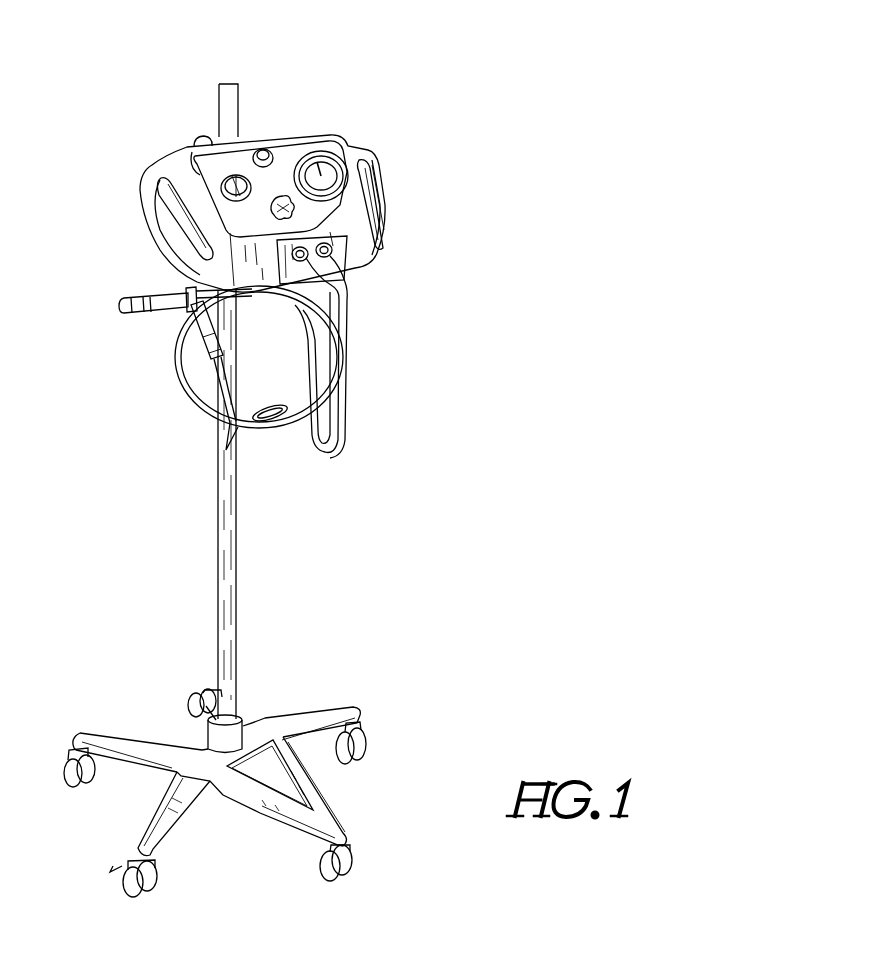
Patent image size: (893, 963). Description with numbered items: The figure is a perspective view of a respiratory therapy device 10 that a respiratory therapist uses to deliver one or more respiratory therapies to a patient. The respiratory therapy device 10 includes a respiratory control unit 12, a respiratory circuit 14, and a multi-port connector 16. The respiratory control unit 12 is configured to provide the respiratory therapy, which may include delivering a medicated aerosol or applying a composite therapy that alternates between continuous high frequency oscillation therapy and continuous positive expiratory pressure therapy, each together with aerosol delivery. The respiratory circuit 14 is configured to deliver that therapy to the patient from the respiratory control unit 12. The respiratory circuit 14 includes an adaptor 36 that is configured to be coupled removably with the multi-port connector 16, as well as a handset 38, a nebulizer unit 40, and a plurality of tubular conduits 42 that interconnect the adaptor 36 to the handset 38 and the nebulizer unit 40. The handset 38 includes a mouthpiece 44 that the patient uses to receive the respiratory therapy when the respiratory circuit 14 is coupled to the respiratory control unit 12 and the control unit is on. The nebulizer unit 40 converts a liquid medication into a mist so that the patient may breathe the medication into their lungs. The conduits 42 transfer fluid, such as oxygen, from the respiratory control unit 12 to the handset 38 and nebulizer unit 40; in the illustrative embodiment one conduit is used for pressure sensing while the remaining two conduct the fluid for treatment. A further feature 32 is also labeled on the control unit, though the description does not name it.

The respiratory therapy device 10 is at (435, 124).
The respiratory control unit 12 is at (355, 131).
The respiratory circuit 14 is at (131, 292).
The multi-port connector 16 is at (386, 236).
The power button 32 is at (194, 129).
The adaptor 36 is at (359, 270).
The handset 38 is at (162, 331).
The nebulizer unit 40 is at (195, 349).
The tubular conduits 42 is at (343, 373).
The mouthpiece 44 is at (132, 314).